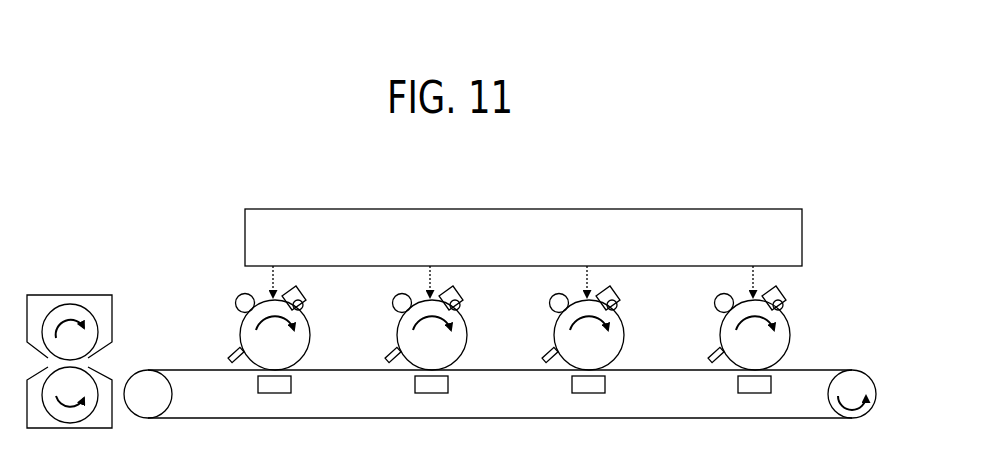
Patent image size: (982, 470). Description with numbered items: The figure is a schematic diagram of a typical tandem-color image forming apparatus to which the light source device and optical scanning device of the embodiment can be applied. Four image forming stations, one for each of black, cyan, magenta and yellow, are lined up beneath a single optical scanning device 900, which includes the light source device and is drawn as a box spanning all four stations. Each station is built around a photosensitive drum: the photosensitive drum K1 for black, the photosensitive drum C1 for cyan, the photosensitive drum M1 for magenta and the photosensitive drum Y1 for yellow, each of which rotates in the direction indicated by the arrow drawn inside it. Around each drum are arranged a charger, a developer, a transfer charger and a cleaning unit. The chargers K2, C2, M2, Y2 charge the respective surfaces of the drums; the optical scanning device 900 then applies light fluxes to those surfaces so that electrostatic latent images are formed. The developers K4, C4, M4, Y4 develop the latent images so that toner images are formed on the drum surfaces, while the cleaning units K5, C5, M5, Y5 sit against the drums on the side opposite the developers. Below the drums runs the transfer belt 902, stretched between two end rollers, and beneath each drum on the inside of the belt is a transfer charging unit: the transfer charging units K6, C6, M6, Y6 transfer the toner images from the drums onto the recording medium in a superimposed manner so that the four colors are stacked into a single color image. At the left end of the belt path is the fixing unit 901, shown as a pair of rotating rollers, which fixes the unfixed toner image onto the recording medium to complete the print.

The optical scanning device 900 is at (757, 209).
The fixing unit 901 is at (88, 295).
The transfer belt 902 is at (737, 418).
The photosensitive drum K1 is at (309, 342).
The charger K2 is at (238, 296).
The developer K4 is at (306, 292).
The cleaning unit K5 is at (232, 350).
The transfer charging unit K6 is at (291, 388).
The photosensitive drum C1 is at (466, 342).
The charger C2 is at (395, 296).
The developer C4 is at (463, 292).
The cleaning unit C5 is at (389, 350).
The transfer charging unit C6 is at (448, 388).
The photosensitive drum M1 is at (623, 342).
The charger M2 is at (552, 296).
The developer M4 is at (620, 292).
The cleaning unit M5 is at (546, 350).
The transfer charging unit M6 is at (605, 388).
The photosensitive drum Y1 is at (789, 342).
The charger Y2 is at (717, 296).
The developer Y4 is at (786, 292).
The cleaning unit Y5 is at (712, 350).
The transfer charging unit Y6 is at (771, 388).